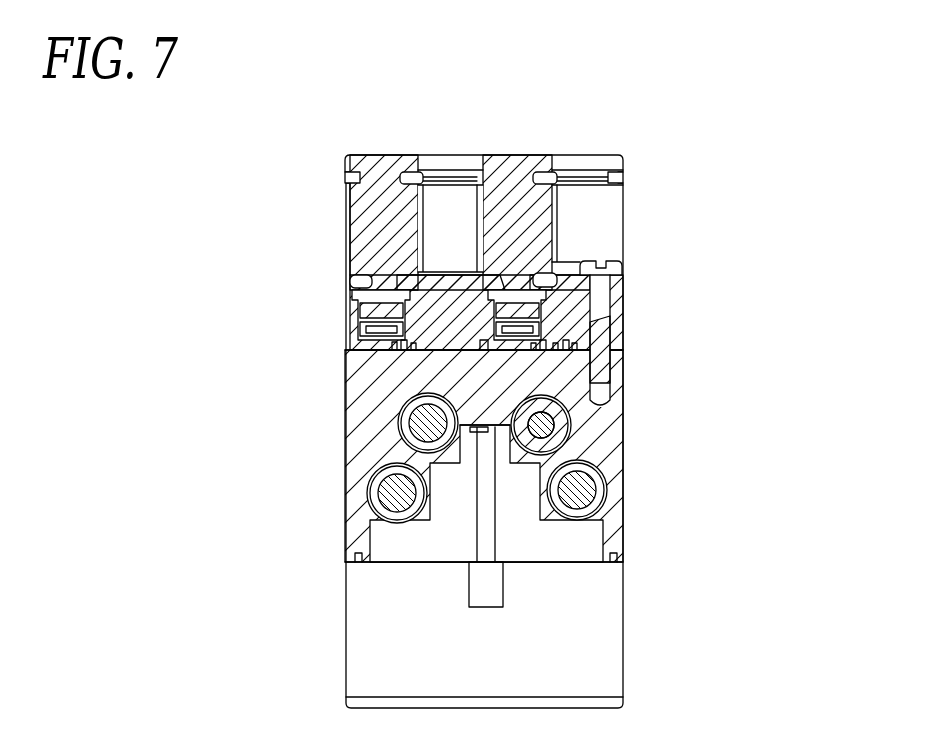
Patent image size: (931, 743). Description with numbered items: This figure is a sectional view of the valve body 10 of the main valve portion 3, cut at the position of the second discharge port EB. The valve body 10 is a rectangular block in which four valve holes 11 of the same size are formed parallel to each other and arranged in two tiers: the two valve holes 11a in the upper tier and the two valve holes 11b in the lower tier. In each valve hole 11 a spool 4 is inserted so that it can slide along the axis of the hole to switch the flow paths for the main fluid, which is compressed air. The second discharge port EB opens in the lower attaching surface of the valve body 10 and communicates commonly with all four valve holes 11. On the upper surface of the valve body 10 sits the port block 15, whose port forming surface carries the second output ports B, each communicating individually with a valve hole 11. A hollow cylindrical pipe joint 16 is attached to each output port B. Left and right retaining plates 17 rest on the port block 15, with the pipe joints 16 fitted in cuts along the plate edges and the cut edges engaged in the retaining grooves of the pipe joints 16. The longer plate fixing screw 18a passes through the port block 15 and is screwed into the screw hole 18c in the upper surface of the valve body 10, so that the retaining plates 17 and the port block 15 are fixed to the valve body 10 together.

The main valve portion 3 is at (786, 288).
The spool 4 is at (376, 487).
The valve body 10 is at (362, 372).
The valve hole 11 is at (502, 485).
The valve hole in the upper tier 11a is at (484, 424).
The valve hole in the lower tier 11b is at (487, 491).
The port block 15 is at (347, 318).
The pipe joint 16 is at (580, 165).
The retaining plate 17 is at (410, 273).
The plate fixing screw 18a is at (608, 262).
The screw hole 18c is at (604, 340).
The second output port B is at (367, 285).
The second discharge port EB is at (556, 562).